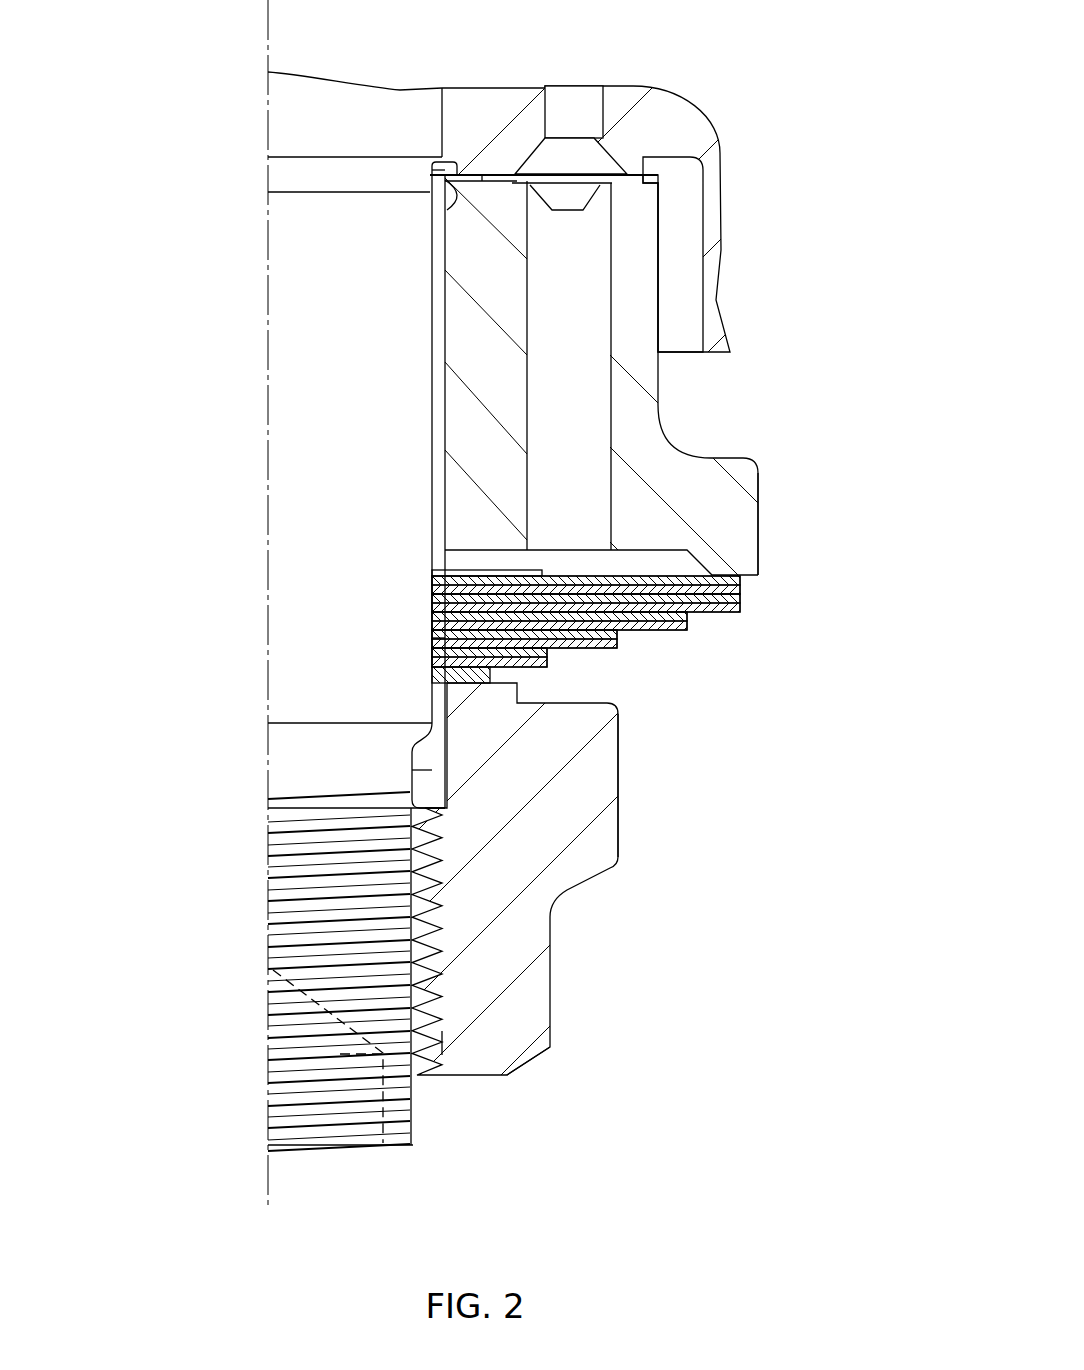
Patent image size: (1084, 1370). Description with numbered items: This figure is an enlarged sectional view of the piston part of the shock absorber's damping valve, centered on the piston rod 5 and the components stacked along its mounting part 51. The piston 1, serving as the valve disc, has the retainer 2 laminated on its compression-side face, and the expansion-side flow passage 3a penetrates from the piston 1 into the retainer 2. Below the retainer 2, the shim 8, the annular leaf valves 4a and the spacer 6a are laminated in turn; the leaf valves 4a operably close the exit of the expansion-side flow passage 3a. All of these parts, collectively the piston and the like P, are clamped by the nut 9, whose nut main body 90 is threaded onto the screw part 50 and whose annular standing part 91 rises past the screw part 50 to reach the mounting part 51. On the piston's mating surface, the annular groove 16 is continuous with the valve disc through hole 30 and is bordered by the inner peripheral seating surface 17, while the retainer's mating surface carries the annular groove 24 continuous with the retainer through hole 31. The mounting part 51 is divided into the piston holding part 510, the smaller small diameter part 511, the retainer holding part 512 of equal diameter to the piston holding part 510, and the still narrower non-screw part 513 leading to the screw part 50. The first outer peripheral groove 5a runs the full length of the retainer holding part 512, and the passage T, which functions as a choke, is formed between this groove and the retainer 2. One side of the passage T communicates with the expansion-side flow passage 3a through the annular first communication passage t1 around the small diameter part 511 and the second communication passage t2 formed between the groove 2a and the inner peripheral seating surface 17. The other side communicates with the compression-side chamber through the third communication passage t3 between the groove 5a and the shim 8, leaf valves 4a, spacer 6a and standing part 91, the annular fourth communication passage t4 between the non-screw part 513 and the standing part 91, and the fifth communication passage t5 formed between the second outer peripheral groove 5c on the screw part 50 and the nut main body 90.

The piston 1 is at (715, 170).
The retainer 2 is at (660, 430).
The groove 2a is at (510, 170).
The expansion-side flow passage 3a is at (592, 325).
The leaf valves 4a is at (547, 657).
The piston rod 5 is at (335, 1152).
The first outer peripheral groove 5a is at (437, 462).
The second outer peripheral groove 5c is at (275, 965).
The spacer 6a is at (488, 677).
The shim 8 is at (565, 553).
The nut 9 is at (575, 945).
The annular groove 16 is at (588, 160).
The inner peripheral seating surface 17 is at (440, 208).
The annular groove 24 is at (553, 213).
The valve disc through hole 30 is at (580, 107).
The retainer through hole 31 is at (548, 405).
The screw part 50 is at (272, 885).
The mounting part 51 is at (272, 423).
The nut main body 90 is at (527, 1017).
The standing part 91 is at (600, 785).
The piston holding part 510 is at (283, 107).
The small diameter part 511 is at (283, 177).
The retainer holding part 512 is at (300, 570).
The non-screw part 513 is at (300, 755).
The piston and the like P is at (782, 462).
The passage T is at (432, 350).
The first communication passage t1 is at (428, 165).
The second communication passage t2 is at (484, 175).
The third communication passage t3 is at (437, 637).
The fourth communication passage t4 is at (433, 755).
The fifth communication passage t5 is at (452, 1038).